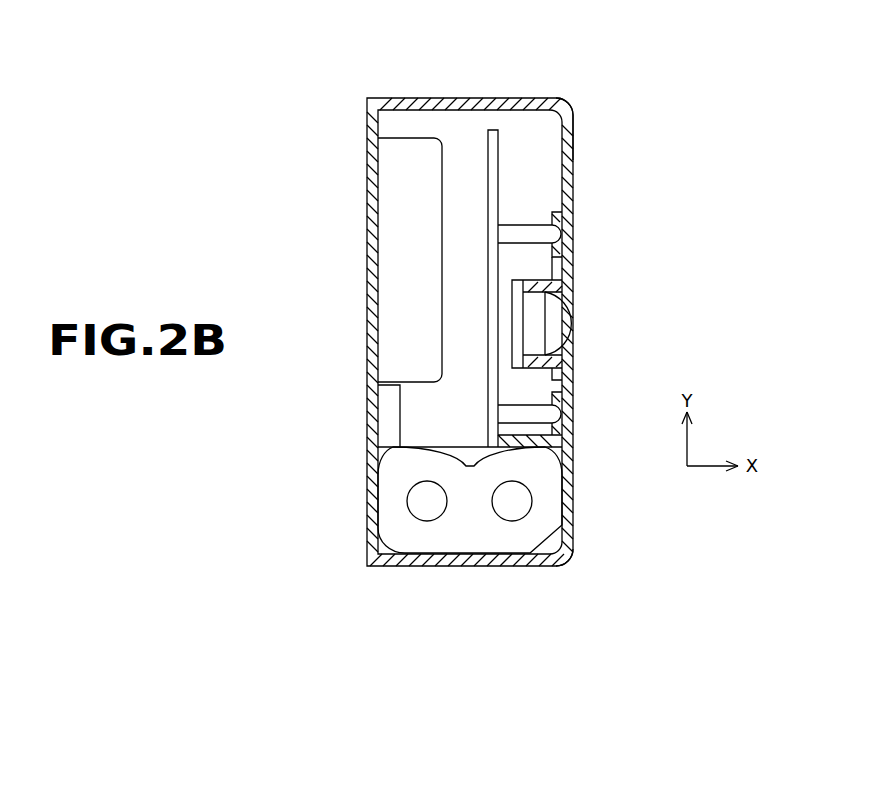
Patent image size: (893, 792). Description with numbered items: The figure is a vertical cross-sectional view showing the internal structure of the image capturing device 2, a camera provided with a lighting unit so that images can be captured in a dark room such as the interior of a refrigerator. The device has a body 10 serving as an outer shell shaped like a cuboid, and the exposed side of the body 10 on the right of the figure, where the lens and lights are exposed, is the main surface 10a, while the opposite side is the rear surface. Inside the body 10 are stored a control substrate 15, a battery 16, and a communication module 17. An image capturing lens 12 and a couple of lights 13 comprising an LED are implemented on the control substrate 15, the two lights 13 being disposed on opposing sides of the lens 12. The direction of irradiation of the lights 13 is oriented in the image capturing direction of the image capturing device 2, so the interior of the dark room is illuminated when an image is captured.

The image capturing device 2 is at (575, 583).
The body 10 is at (480, 98).
The main surface 10a is at (575, 148).
The image capturing lens 12 is at (545, 318).
The image capturing lighting 13 is at (528, 224).
The control substrate 15 is at (500, 181).
The battery 16 is at (466, 545).
The communication module 17 is at (387, 248).